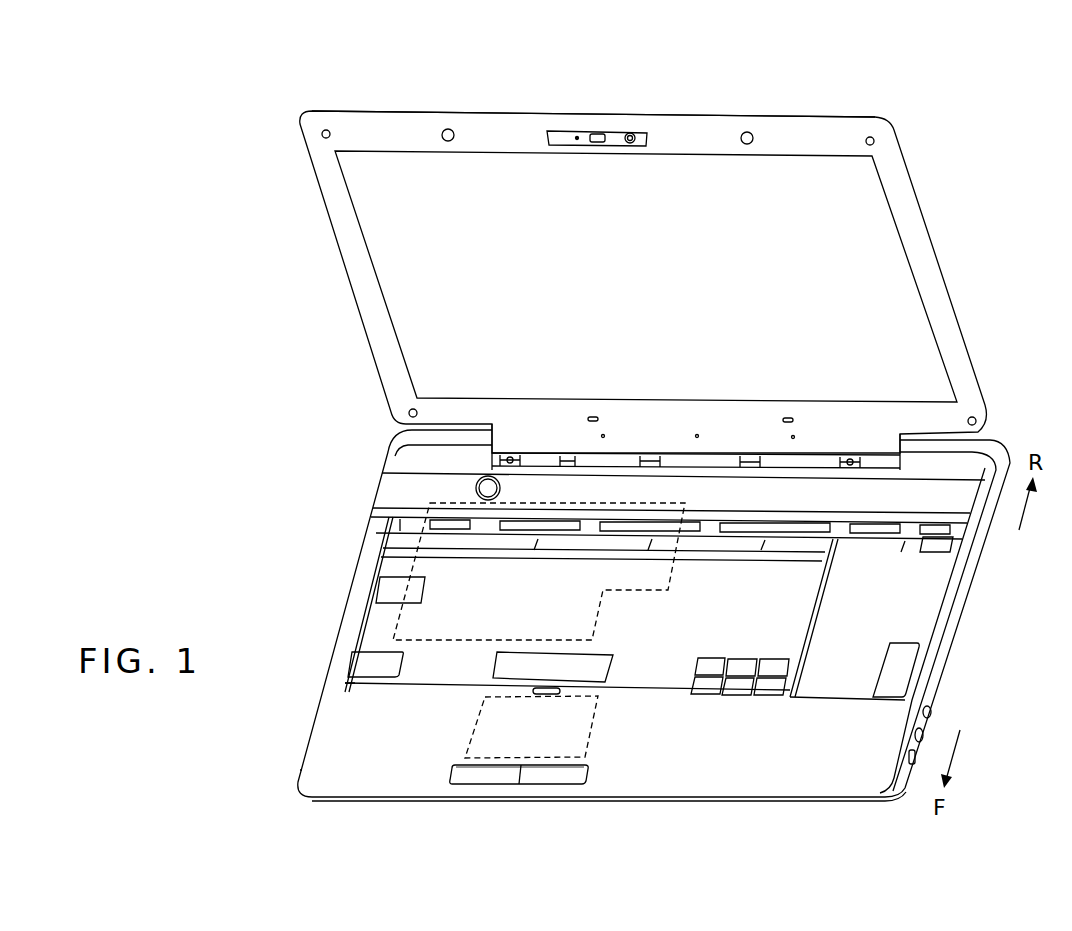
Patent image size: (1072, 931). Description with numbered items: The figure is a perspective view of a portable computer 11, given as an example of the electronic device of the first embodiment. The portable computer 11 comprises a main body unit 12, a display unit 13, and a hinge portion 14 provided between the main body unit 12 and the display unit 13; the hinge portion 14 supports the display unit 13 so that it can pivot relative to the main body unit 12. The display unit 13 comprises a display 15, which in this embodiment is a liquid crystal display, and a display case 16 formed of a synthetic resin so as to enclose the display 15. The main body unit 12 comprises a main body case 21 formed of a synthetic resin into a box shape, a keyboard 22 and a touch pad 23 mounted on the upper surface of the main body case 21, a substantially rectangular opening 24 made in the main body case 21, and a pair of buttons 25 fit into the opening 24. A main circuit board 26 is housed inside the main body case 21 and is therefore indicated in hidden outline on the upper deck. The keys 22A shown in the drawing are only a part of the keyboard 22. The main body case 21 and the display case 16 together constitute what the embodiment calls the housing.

The portable computer 11 is at (747, 90).
The main body unit 12 is at (319, 559).
The display unit 13 is at (302, 279).
The hinge portion 14 is at (494, 446).
The display 15 is at (876, 236).
The display case 16 is at (848, 134).
The main body case 21 is at (333, 725).
The keyboard 22 is at (913, 598).
The keys 22A is at (768, 697).
The touch pad 23 is at (475, 730).
The opening 24 is at (596, 780).
The buttons 25 is at (540, 775).
The main circuit board 26 is at (455, 502).